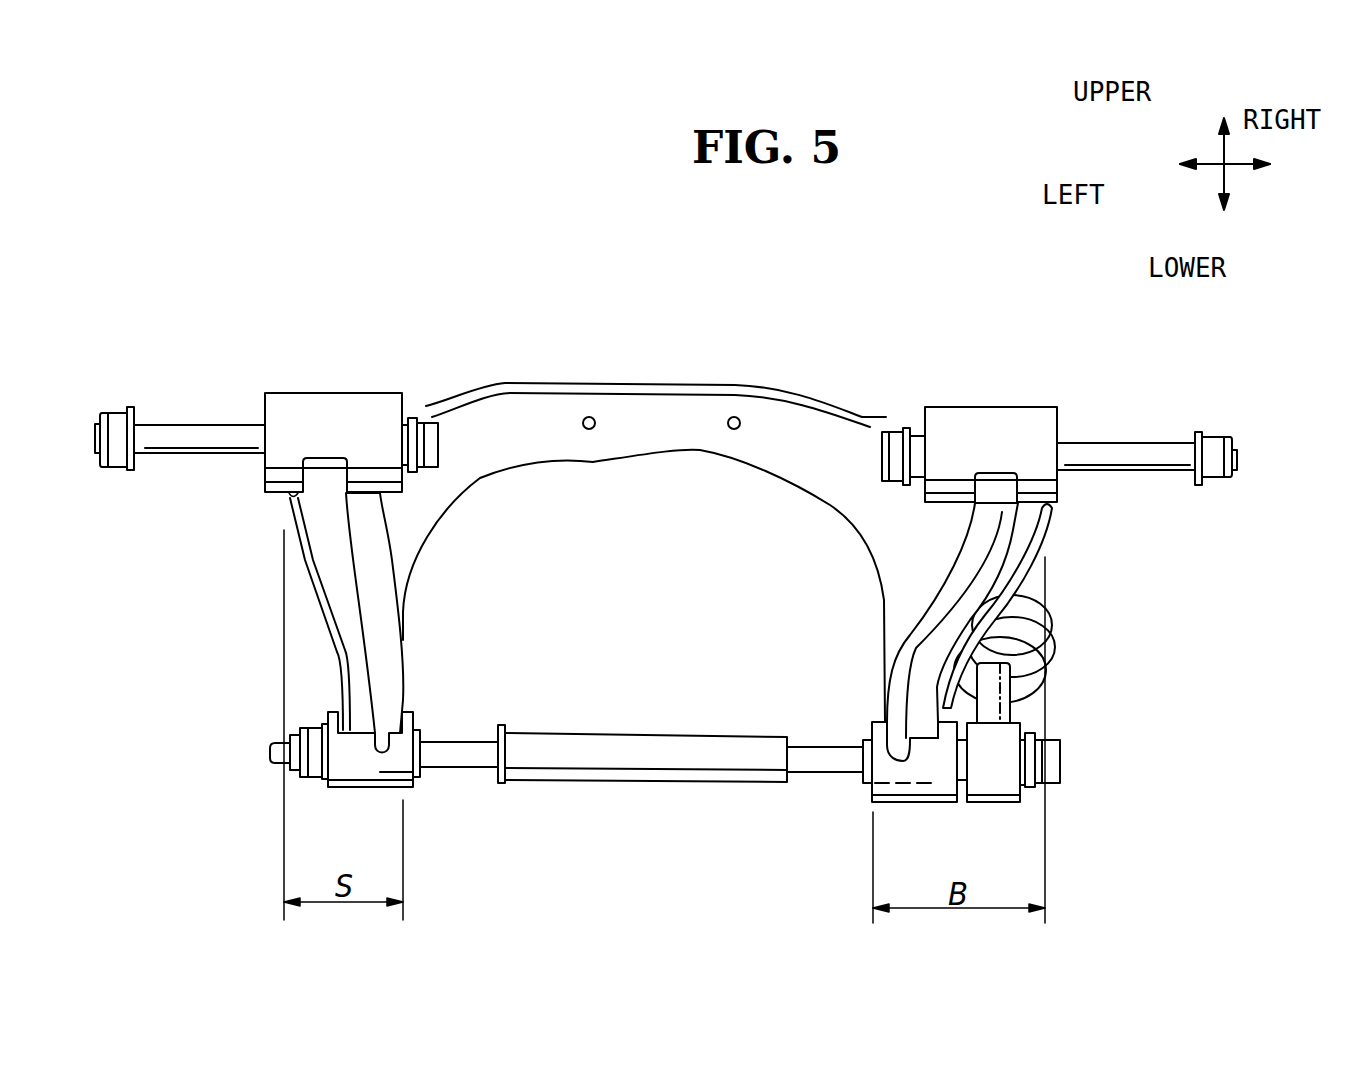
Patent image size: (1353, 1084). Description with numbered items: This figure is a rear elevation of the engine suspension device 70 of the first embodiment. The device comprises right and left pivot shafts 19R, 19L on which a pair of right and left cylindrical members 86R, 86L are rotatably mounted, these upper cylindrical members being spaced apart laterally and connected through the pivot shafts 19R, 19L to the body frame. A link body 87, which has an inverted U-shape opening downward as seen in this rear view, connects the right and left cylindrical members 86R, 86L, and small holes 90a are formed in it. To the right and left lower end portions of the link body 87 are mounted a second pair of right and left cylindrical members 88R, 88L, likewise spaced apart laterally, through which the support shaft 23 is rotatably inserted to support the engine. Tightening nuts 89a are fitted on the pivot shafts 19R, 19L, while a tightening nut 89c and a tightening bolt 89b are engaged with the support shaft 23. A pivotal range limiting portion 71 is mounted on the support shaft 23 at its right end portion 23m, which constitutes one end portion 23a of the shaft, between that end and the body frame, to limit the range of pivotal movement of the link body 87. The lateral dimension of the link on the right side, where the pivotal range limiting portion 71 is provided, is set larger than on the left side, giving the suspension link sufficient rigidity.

The engine suspension device 70 is at (455, 248).
The pivotal range limiting portion 71 is at (1085, 584).
The left pivot shaft 19L is at (180, 438).
The right pivot shaft 19R is at (1133, 452).
The left cylindrical member 86L is at (325, 402).
The right cylindrical member 86R is at (993, 423).
The link body 87 is at (535, 420).
The small holes 90a is at (590, 417).
The tightening nuts 89a is at (118, 463).
The tightening bolt 89b is at (1061, 787).
The tightening nut 89c is at (312, 770).
The left cylindrical member 88L is at (352, 767).
The right cylindrical member 88R is at (910, 784).
The support shaft 23 is at (467, 757).
The one end portion 23a is at (965, 802).
The right end portion 23m is at (1102, 813).